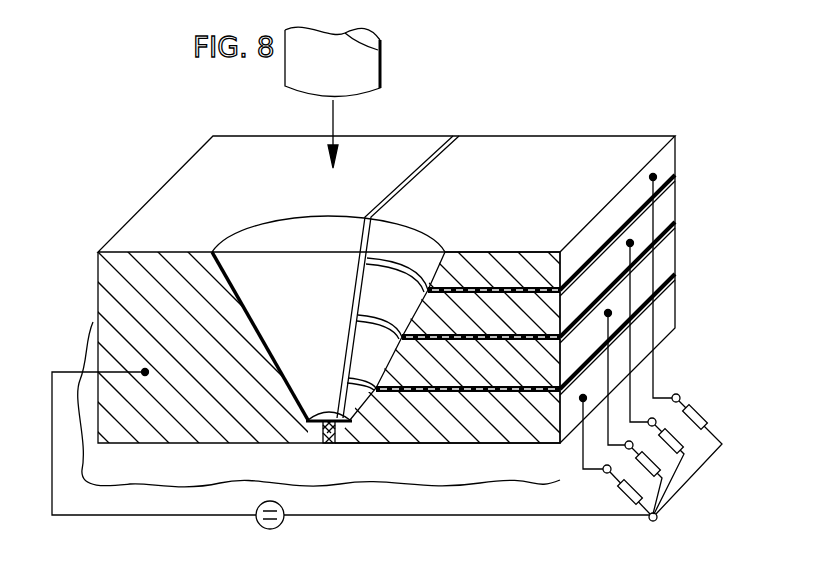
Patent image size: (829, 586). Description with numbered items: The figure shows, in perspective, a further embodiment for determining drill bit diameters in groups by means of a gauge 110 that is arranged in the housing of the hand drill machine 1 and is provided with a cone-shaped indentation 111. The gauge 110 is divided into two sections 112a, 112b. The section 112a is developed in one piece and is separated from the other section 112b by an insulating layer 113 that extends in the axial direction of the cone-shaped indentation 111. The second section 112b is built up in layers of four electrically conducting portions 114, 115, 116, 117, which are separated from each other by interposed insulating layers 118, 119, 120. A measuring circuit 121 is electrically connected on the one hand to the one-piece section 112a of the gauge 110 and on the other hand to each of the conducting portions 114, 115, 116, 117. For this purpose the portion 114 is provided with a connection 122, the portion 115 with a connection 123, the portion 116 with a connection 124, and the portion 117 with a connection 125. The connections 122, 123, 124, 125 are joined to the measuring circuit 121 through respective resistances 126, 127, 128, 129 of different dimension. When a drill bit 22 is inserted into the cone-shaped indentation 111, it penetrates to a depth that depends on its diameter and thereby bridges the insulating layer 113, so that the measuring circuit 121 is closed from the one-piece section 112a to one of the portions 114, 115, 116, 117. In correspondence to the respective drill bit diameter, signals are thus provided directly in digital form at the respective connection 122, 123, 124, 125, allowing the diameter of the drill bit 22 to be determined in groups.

The hand drill machine 1 is at (358, 451).
The drill bit 22 is at (355, 62).
The gauge 110 is at (557, 128).
The cone-shaped indentation 111 is at (236, 274).
The section of the gauge 112a is at (213, 420).
The section of the gauge 112b is at (426, 428).
The insulating layer 113 is at (357, 274).
The electrically conducting portion 114 is at (665, 306).
The electrically conducting portion 115 is at (665, 259).
The electrically conducting portion 116 is at (665, 213).
The electrically conducting portion 117 is at (664, 166).
The insulating layer 118 is at (503, 395).
The insulating layer 119 is at (402, 338).
The insulating layer 120 is at (428, 290).
The measuring circuit 121 is at (291, 531).
The connection 122 is at (581, 449).
The connection 123 is at (606, 409).
The connection 124 is at (632, 380).
The connection 125 is at (654, 384).
The resistance 126 is at (617, 486).
The resistance 127 is at (643, 473).
The resistance 128 is at (678, 442).
The resistance 129 is at (694, 407).